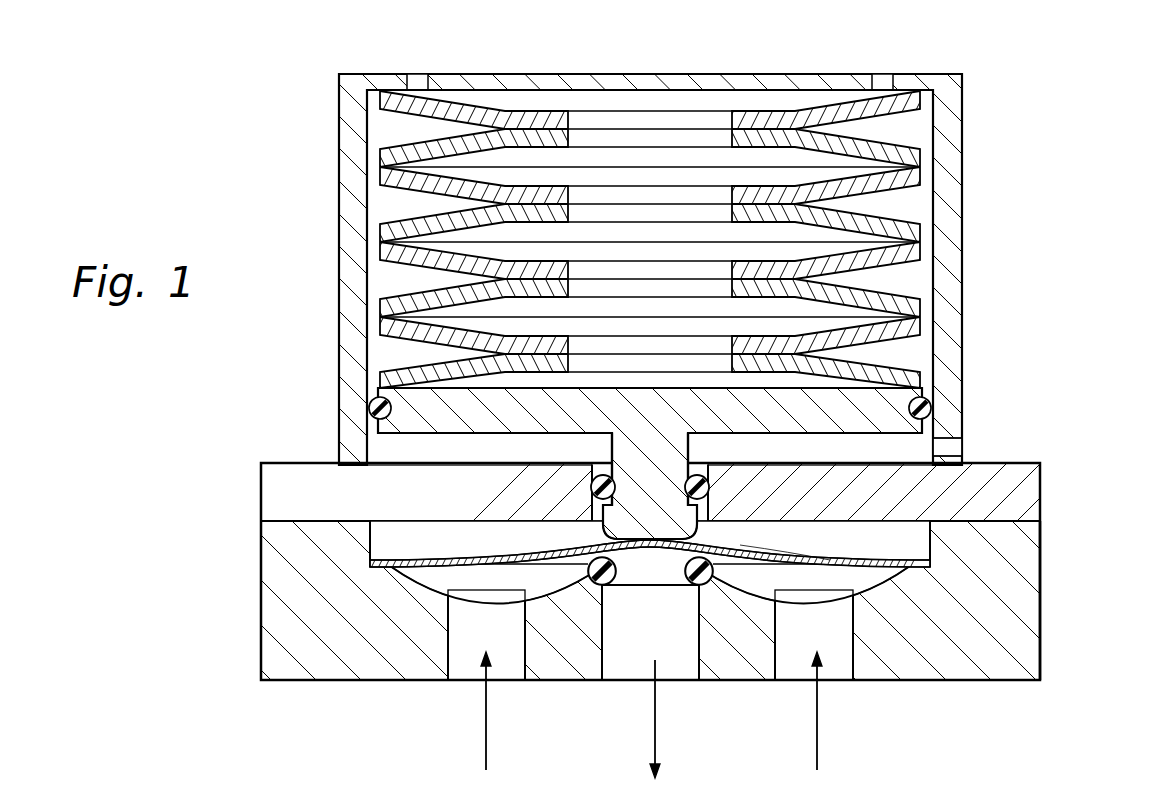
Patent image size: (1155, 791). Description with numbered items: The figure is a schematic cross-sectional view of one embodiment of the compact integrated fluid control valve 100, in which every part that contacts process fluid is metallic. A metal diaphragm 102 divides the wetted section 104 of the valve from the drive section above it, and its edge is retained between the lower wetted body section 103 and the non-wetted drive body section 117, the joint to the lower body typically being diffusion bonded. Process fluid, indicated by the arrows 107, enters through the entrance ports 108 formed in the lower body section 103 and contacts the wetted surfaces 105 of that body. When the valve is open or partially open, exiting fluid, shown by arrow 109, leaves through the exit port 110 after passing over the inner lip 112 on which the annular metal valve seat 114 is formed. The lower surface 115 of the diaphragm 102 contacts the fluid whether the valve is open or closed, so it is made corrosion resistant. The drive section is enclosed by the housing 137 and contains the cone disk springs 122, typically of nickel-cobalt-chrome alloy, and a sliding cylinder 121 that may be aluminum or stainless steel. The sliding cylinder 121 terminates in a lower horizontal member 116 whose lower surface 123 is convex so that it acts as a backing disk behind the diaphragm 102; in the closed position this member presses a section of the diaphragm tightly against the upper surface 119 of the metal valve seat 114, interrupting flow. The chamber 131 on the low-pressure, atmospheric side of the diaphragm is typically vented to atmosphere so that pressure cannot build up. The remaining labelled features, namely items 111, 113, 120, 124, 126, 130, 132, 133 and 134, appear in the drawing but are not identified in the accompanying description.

The valve 100 is at (1044, 54).
The metal diaphragm 102 is at (863, 567).
The lower wetted body section 103 is at (1023, 664).
The wetted section 104 is at (550, 580).
The surfaces 105 is at (525, 652).
The arrow 107 is at (480, 748).
The entrance port 108 is at (470, 668).
The arrow 109 is at (648, 762).
The exit port 110 is at (632, 668).
The bore 111 is at (699, 463).
The inner lip 112 is at (632, 585).
The upper O-ring seal 113 is at (589, 488).
The metal valve seat 114 is at (542, 563).
The lower surface 115 is at (810, 563).
The lower horizontal member 116 is at (667, 540).
The non-wetted drive body section 117 is at (832, 518).
The upper surface 119 is at (612, 548).
The piston O-ring 120 is at (372, 410).
The sliding cylinder 121 is at (650, 405).
The cone disk springs 122 is at (900, 233).
The lower surface 123 is at (614, 528).
The cavity 124 is at (930, 447).
The vent port 126 is at (963, 448).
The cavity 130 is at (447, 433).
The chamber 131 is at (915, 546).
The housing 132 is at (416, 74).
The body portion 133 is at (1022, 570).
The shoulder 134 is at (625, 451).
The housing 137 is at (651, 73).